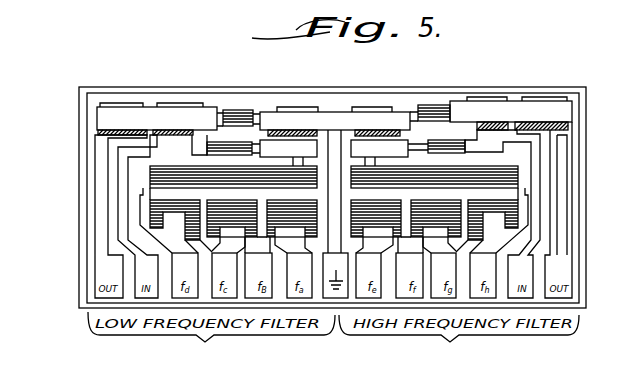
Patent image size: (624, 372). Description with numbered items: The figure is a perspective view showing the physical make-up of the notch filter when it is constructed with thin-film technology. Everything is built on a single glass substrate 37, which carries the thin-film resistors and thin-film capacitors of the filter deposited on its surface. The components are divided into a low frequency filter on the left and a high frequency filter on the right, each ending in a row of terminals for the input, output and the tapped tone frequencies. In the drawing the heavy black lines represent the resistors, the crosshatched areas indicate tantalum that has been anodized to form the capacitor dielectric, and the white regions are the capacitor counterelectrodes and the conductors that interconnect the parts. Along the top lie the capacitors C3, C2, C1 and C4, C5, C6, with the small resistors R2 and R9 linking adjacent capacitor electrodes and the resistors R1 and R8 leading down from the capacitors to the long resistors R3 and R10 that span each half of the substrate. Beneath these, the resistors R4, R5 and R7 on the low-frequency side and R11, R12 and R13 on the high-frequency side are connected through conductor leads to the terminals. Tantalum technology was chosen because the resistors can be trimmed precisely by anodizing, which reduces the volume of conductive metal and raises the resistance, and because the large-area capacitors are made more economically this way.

The glass substrate 37 is at (79, 158).
The thin-film capacitor C1 is at (335, 121).
The thin-film capacitor C2 is at (178, 119).
The thin-film capacitor C3 is at (157, 119).
The thin-film capacitor C4 is at (376, 121).
The thin-film capacitor C5 is at (511, 113).
The thin-film capacitor C6 is at (541, 113).
The thin-film resistor R1 is at (226, 146).
The thin-film resistor R2 is at (238, 118).
The thin-film resistor R3 is at (233, 177).
The thin-film resistor R4 is at (175, 220).
The thin-film resistor R5 is at (232, 218).
The thin-film resistor R7 is at (292, 218).
The thin-film resistor R8 is at (436, 148).
The thin-film resistor R9 is at (430, 113).
The thin-film resistor R10 is at (434, 177).
The thin-film resistor R11 is at (376, 218).
The thin-film resistor R12 is at (436, 218).
The thin-film resistor R13 is at (493, 220).